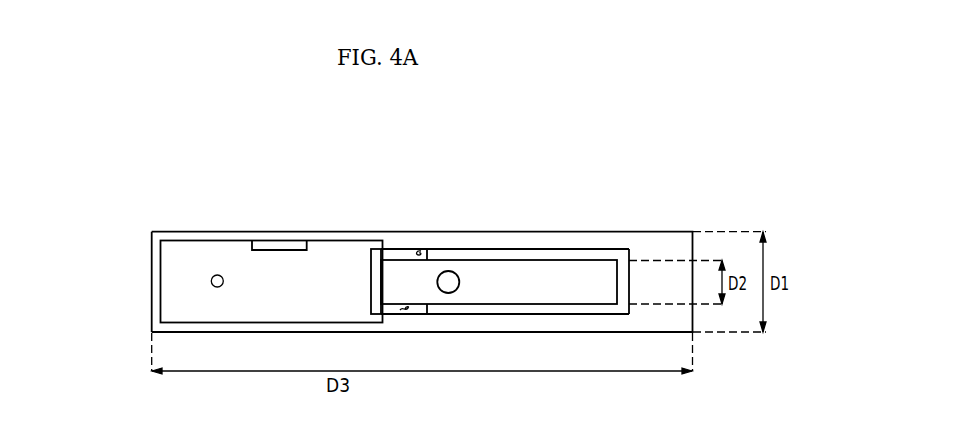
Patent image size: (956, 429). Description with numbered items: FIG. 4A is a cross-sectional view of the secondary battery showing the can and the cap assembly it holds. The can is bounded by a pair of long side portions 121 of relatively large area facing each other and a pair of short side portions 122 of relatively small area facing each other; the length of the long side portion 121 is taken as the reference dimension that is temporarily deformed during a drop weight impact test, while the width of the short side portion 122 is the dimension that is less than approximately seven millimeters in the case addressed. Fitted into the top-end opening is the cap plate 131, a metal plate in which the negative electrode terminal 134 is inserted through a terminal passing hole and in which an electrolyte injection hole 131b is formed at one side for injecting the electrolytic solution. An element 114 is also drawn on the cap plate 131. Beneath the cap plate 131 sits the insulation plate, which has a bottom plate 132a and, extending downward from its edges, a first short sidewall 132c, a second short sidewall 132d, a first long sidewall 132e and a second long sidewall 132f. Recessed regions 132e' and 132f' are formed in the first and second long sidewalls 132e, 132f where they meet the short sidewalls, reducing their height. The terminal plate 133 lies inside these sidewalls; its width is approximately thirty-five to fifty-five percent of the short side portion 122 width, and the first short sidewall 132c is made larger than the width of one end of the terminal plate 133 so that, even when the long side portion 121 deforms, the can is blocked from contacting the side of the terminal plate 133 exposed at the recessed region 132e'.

The long side portion 121 is at (168, 233).
The short side portion 122 is at (154, 253).
The cap plate 131 is at (176, 288).
The electrolyte injection hole 131b is at (217, 275).
The tab 114 is at (264, 245).
The first short sidewall 132c is at (375, 277).
The bottom plate 132a is at (396, 254).
The recessed region 132e' is at (424, 218).
The negative electrode terminal 134 is at (450, 275).
The first long sidewall 132e is at (528, 217).
The terminal plate 133 is at (573, 267).
The second short sidewall 132d is at (627, 280).
The recessed region 132f' is at (407, 360).
The second long sidewall 132f is at (505, 358).